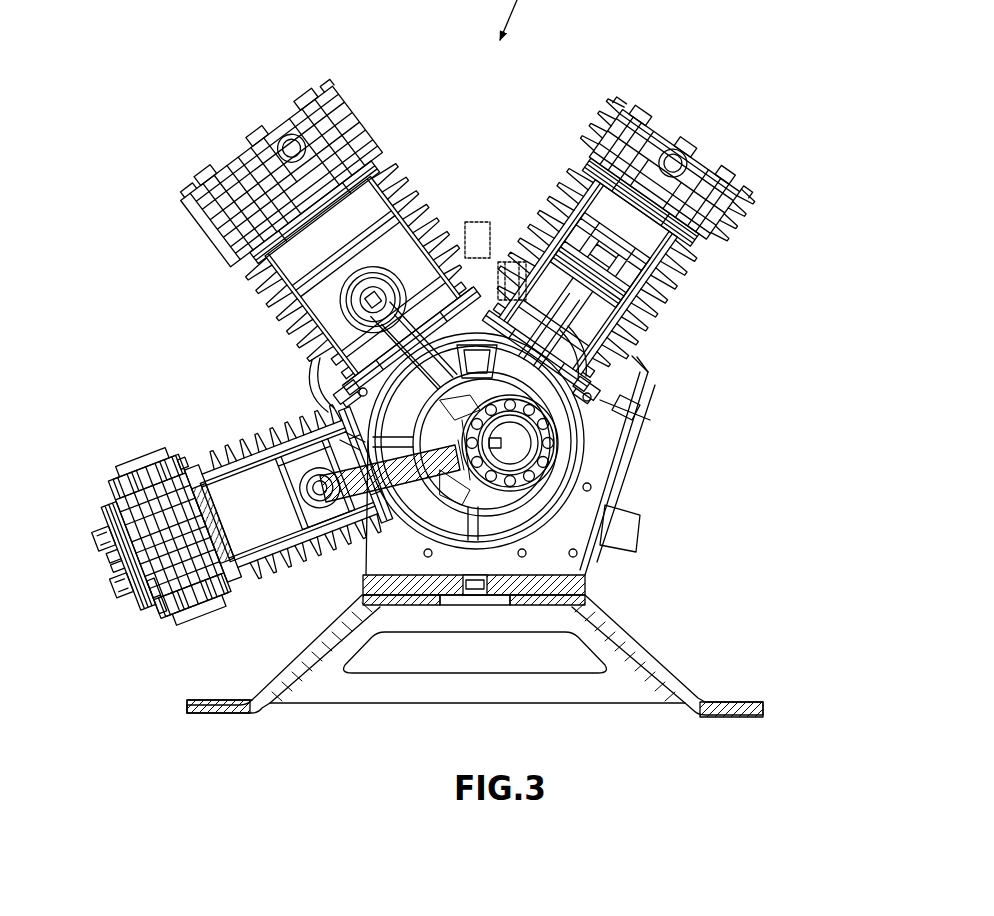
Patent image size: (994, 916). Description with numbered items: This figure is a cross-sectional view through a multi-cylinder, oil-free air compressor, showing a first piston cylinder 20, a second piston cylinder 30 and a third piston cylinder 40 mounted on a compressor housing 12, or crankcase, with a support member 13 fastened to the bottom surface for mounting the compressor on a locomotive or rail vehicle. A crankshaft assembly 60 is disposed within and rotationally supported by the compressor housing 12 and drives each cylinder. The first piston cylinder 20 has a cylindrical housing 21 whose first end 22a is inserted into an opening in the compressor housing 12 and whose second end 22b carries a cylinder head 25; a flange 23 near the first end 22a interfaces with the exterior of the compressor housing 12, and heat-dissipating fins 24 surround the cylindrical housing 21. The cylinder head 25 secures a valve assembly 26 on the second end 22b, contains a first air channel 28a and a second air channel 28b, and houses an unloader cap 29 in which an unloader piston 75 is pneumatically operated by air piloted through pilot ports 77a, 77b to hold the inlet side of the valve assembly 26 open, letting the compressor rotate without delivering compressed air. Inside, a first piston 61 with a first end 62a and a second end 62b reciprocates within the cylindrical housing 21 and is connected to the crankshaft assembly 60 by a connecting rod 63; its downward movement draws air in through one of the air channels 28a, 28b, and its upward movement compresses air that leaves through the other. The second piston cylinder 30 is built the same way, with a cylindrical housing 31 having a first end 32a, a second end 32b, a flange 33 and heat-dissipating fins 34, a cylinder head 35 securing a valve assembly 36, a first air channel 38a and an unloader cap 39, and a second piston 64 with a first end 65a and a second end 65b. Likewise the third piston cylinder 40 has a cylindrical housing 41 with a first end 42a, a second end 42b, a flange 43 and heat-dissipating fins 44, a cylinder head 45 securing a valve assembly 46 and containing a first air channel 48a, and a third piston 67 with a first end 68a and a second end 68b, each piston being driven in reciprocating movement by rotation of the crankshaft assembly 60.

The compressor housing 12 is at (605, 425).
The support member 13 is at (716, 712).
The first piston cylinder 20 is at (105, 476).
The cylindrical housing 21 is at (222, 465).
The first end 22a is at (347, 557).
The second end 22b is at (243, 590).
The flange 23 is at (338, 437).
The heat-dissipating fins 24 is at (272, 442).
The cylinder head 25 is at (141, 608).
The valve assembly 26 is at (185, 475).
The first air channel 28a is at (145, 470).
The second air channel 28b is at (196, 612).
The unloader cap 29 is at (118, 553).
The second piston cylinder 30 is at (255, 98).
The cylindrical housing 31 is at (283, 282).
The first end 32a is at (454, 234).
The second end 32b is at (417, 158).
The flange 33 is at (322, 352).
The heat-dissipating fins 34 is at (298, 318).
The cylinder head 35 is at (377, 124).
The valve assembly 36 is at (245, 248).
The first air channel 38a is at (290, 160).
The unloader cap 39 is at (268, 160).
The third piston cylinder 40 is at (717, 126).
The cylindrical housing 41 is at (662, 250).
The first end 42a is at (647, 328).
The second end 42b is at (577, 160).
The flange 43 is at (640, 350).
The heat-dissipating fins 44 is at (642, 275).
The cylinder head 45 is at (742, 225).
The valve assembly 46 is at (678, 242).
The first air channel 48a is at (680, 162).
The crankshaft assembly 60 is at (560, 425).
The first piston 61 is at (300, 566).
The first end 62a is at (266, 500).
The second end 62b is at (346, 450).
The connecting rod 63 is at (505, 385).
The second piston 64 is at (430, 262).
The first end 65a is at (358, 252).
The second end 65b is at (492, 243).
The third piston 67 is at (598, 216).
The first end 68a is at (576, 172).
The second end 68b is at (545, 266).
The unloader piston 75 is at (171, 617).
The pilot port 77a is at (136, 586).
The pilot port 77b is at (138, 518).